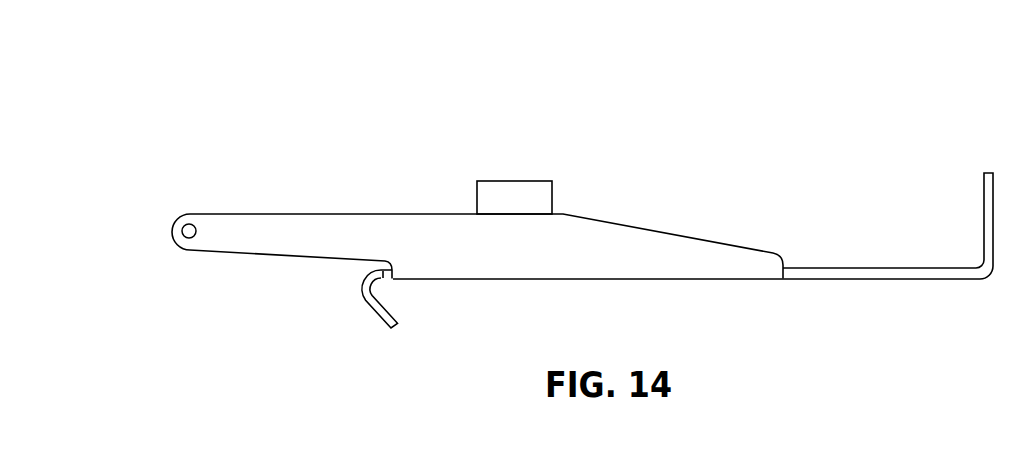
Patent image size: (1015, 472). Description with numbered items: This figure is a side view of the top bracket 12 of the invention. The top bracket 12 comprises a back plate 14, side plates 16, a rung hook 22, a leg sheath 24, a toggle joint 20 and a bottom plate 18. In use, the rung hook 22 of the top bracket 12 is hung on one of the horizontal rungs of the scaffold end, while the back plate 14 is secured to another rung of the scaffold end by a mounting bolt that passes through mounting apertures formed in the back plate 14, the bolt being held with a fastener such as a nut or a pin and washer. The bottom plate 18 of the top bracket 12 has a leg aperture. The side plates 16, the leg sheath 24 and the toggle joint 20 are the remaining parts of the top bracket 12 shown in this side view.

The top bracket 12 is at (550, 182).
The back plate 14 is at (693, 216).
The side plates 16 is at (477, 194).
The bottom plate 18 is at (953, 195).
The toggle joint 20 is at (151, 131).
The rung hook 22 is at (373, 302).
The leg sheath 24 is at (562, 170).